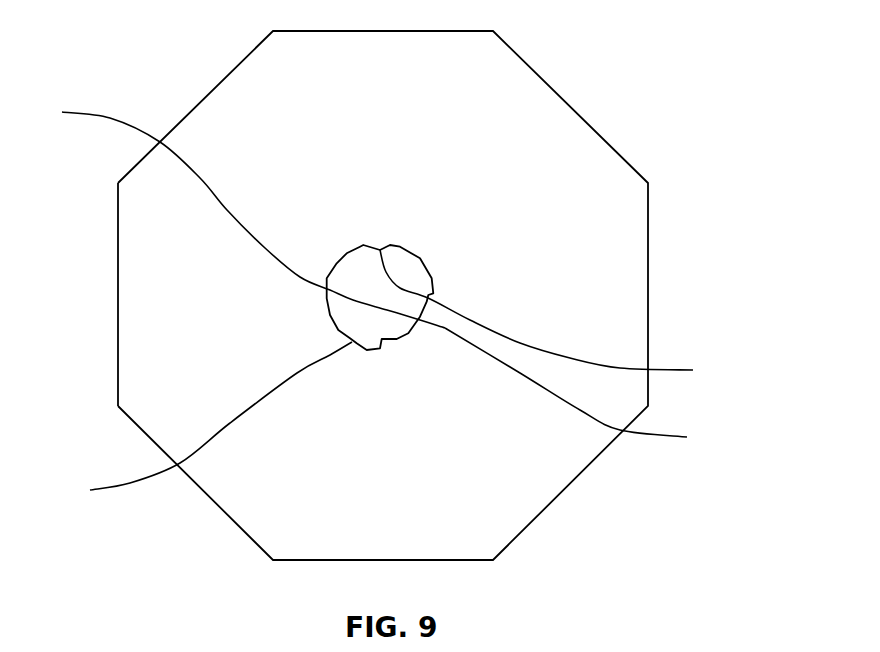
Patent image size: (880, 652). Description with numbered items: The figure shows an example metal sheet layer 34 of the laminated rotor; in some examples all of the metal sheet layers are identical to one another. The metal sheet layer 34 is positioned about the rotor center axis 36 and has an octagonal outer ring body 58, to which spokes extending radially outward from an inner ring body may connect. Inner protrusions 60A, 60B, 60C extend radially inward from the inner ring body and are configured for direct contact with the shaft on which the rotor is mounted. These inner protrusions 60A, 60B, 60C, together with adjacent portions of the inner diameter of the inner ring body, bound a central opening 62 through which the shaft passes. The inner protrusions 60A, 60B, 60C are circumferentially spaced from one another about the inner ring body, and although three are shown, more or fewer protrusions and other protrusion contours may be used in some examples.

The outer ring body 58 is at (383, 30).
The metal sheet layer 34 is at (140, 189).
The rotor center axis 36 is at (236, 213).
The inner protrusion 60A is at (196, 425).
The inner protrusion 60B is at (593, 392).
The inner protrusion 60C is at (564, 318).
The central opening 62 is at (380, 297).